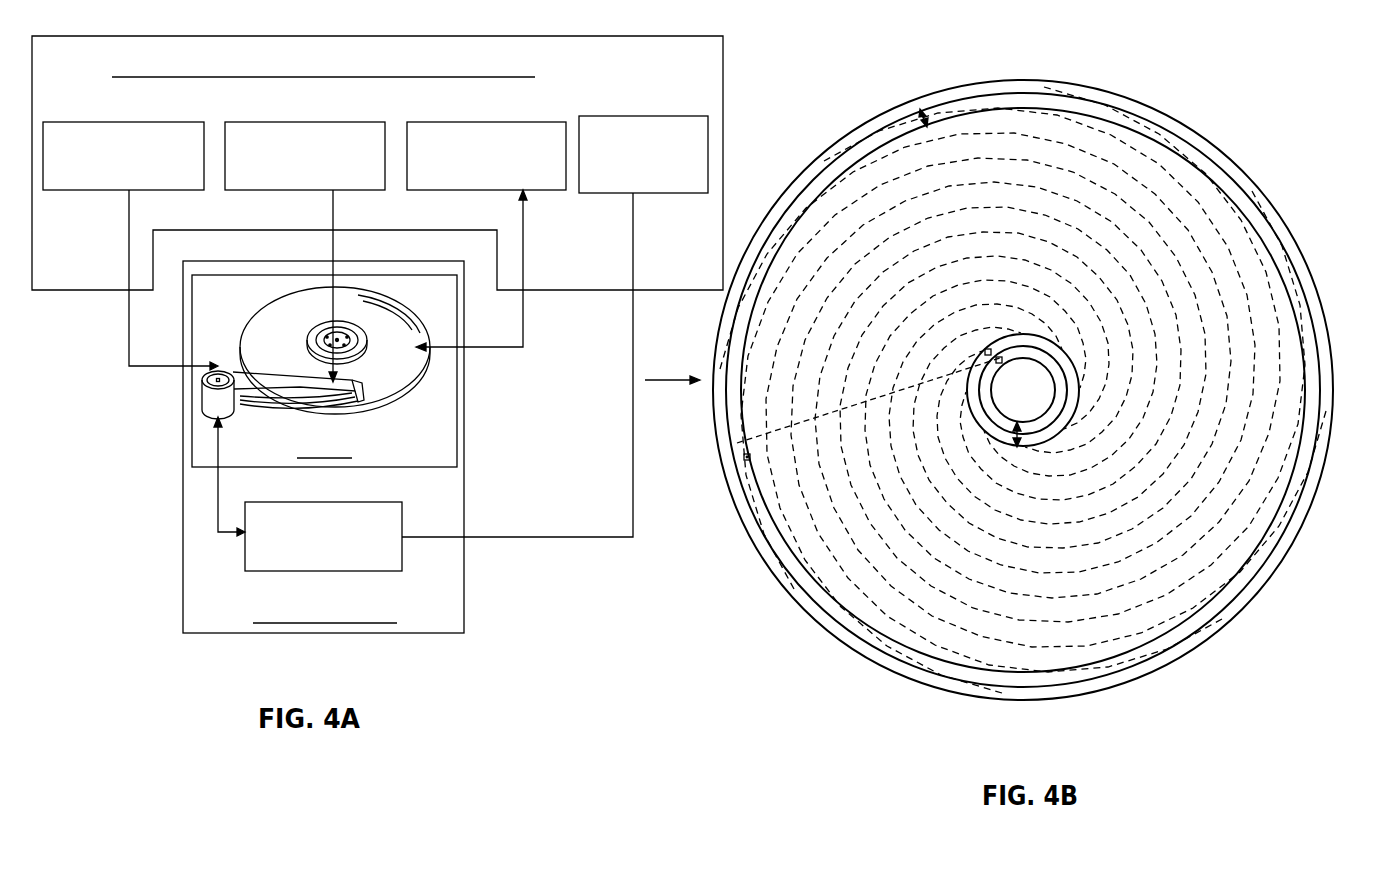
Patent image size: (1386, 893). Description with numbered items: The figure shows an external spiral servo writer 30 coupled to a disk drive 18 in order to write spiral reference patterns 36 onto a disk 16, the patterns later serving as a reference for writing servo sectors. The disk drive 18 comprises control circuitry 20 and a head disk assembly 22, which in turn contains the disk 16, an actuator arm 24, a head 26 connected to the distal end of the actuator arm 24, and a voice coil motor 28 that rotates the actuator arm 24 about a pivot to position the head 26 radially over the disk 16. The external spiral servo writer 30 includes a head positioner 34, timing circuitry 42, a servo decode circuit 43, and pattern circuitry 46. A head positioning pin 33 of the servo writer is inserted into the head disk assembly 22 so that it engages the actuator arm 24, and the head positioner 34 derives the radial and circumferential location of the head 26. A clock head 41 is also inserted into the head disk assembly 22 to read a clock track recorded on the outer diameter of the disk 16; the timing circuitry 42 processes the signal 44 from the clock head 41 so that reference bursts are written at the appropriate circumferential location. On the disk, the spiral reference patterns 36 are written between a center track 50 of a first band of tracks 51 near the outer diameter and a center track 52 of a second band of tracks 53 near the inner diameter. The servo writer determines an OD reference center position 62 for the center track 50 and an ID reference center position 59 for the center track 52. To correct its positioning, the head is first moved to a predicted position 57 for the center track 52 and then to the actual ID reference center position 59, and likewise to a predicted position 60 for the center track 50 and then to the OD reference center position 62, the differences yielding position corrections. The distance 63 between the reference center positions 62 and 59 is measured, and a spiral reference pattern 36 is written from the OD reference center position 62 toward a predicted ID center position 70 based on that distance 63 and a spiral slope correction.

In FIG. 4A, the external spiral servo writer 30 is at (683, 37).
In FIG. 4A, the pattern circuitry 46 is at (85, 121).
In FIG. 4A, the head positioner 34 is at (270, 121).
In FIG. 4A, the timing circuitry 42 is at (462, 121).
In FIG. 4A, the servo decode circuit 43 is at (598, 115).
In FIG. 4A, the head positioning pin 33 is at (336, 222).
In FIG. 4A, the signal 44 is at (526, 250).
In FIG. 4A, the clock head 41 is at (415, 345).
In FIG. 4A, the disk 16 is at (427, 380).
In FIG. 4B, the disk 16 is at (1200, 108).
In FIG. 4A, the voice coil motor 28 is at (216, 353).
In FIG. 4A, the actuator arm 24 is at (309, 379).
In FIG. 4A, the head 26 is at (363, 394).
In FIG. 4A, the disk drive 18 is at (467, 470).
In FIG. 4A, the head disk assembly 22 is at (417, 471).
In FIG. 4A, the control circuitry 20 is at (403, 553).
In FIG. 4B, the center track 50 is at (1018, 96).
In FIG. 4B, the first band of tracks 51 is at (919, 110).
In FIG. 4B, the spiral reference patterns 36 is at (1328, 455).
In FIG. 4B, the OD reference center position 62 is at (745, 441).
In FIG. 4B, the predicted position 60 is at (745, 461).
In FIG. 4B, the distance 63 is at (875, 400).
In FIG. 4B, the predicted ID center position 70 is at (987, 348).
In FIG. 4B, the first predicted position 57 is at (1000, 352).
In FIG. 4B, the center track 52 is at (1066, 401).
In FIG. 4B, the ID reference center position 59 is at (995, 384).
In FIG. 4B, the second band of tracks 53 is at (1005, 445).